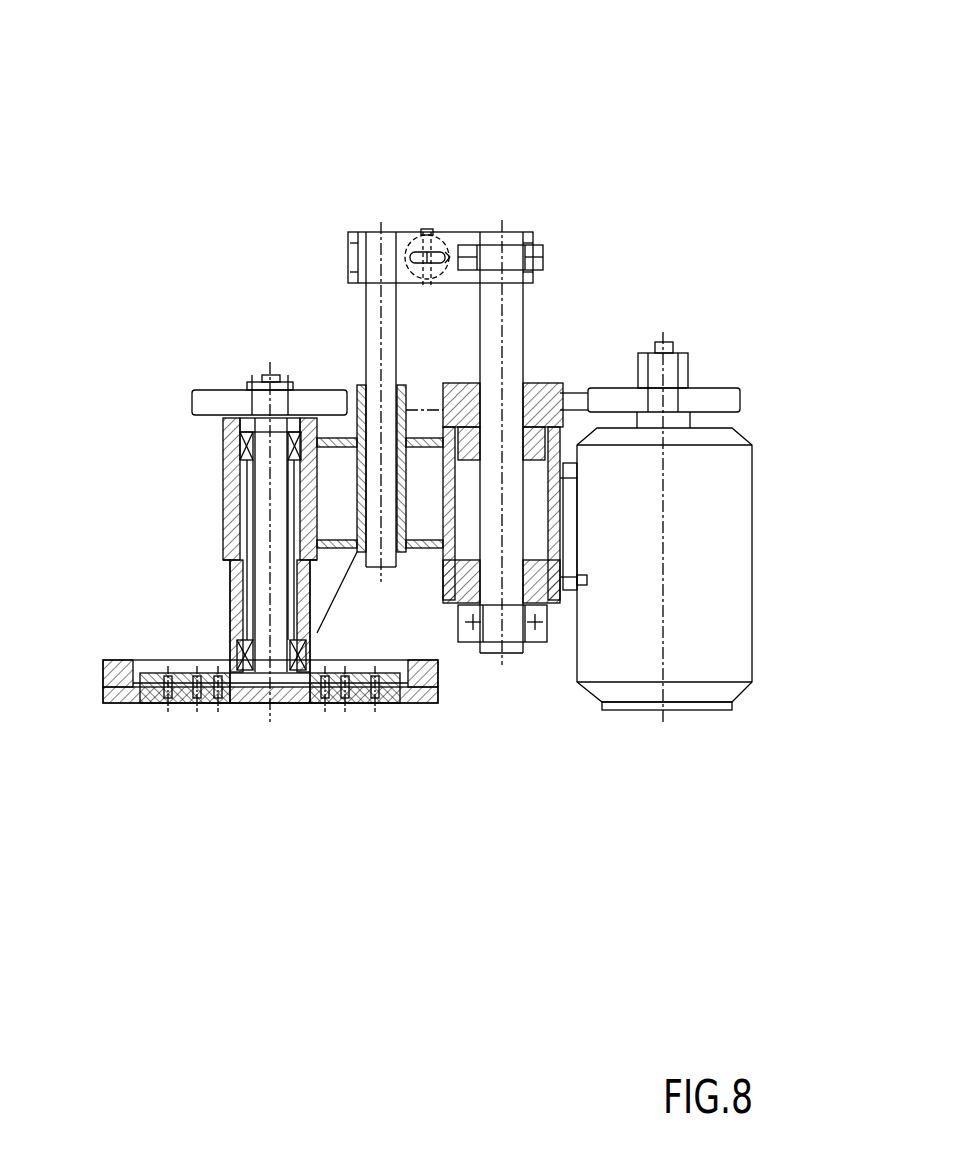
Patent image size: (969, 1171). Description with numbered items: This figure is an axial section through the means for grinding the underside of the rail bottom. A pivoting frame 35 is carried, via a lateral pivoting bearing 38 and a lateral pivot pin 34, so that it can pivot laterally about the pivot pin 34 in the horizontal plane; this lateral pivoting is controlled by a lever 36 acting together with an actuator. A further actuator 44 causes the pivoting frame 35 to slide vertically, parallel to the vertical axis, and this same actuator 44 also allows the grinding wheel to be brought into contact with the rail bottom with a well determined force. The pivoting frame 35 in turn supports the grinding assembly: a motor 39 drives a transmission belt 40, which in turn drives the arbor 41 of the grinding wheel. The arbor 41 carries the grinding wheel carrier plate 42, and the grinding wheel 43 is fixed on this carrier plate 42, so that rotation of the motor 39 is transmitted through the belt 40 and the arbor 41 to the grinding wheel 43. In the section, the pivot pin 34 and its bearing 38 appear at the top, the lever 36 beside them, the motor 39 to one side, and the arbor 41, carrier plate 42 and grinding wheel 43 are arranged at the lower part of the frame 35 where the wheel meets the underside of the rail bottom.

The lateral pivot pin 34 is at (492, 237).
The pivoting frame 35 is at (423, 550).
The lever 36 is at (403, 237).
The lateral pivoting bearing 38 is at (545, 248).
The motor 39 is at (710, 510).
The transmission belt 40 is at (578, 395).
The arbor 41 is at (264, 504).
The grinding wheel carrier plate 42 is at (186, 698).
The grinding wheel 43 is at (126, 672).
The actuator 44 is at (550, 603).